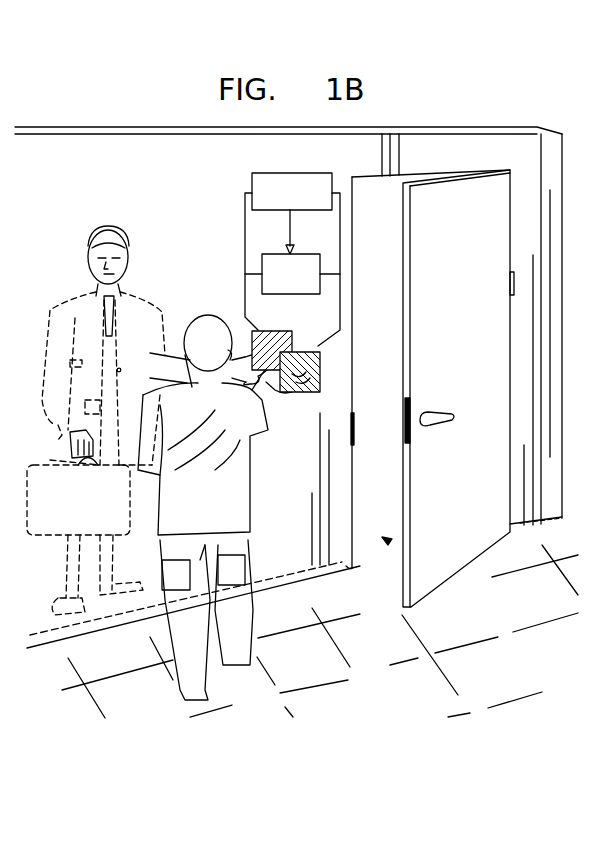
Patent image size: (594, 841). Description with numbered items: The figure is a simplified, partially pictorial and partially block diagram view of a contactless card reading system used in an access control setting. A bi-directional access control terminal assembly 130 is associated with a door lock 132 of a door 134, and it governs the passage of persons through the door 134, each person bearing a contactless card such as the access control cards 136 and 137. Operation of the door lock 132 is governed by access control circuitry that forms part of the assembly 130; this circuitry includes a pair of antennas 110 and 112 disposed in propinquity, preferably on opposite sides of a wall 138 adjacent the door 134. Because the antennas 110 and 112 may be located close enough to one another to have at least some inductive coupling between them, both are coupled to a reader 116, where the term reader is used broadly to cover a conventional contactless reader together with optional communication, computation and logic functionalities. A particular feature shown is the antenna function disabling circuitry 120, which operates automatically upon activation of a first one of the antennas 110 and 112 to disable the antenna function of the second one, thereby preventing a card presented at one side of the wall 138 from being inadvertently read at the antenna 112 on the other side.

The antenna 110 is at (322, 360).
The antenna 112 is at (306, 312).
The reader 116 is at (252, 192).
The antenna function disabling circuitry 120 is at (262, 267).
The bi-directional access control terminal assembly 130 is at (389, 541).
The door lock 132 is at (354, 425).
The door 134 is at (472, 208).
The access control card 136 is at (320, 388).
The access control card 137 is at (256, 428).
The wall 138 is at (373, 249).